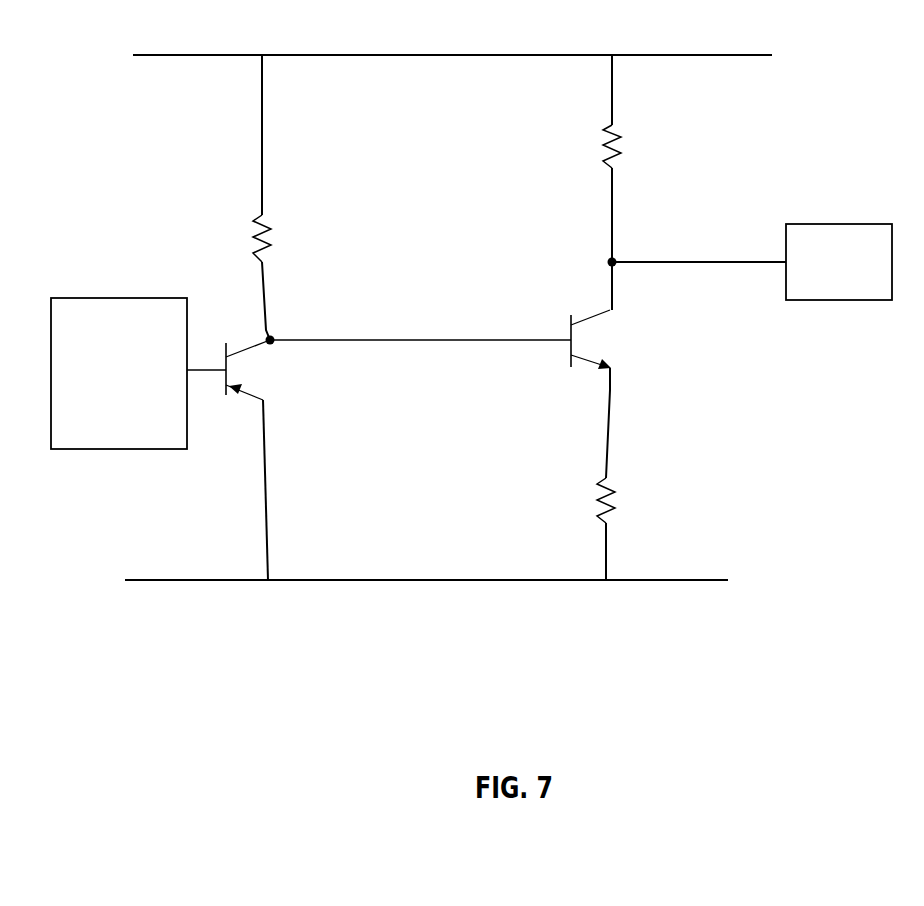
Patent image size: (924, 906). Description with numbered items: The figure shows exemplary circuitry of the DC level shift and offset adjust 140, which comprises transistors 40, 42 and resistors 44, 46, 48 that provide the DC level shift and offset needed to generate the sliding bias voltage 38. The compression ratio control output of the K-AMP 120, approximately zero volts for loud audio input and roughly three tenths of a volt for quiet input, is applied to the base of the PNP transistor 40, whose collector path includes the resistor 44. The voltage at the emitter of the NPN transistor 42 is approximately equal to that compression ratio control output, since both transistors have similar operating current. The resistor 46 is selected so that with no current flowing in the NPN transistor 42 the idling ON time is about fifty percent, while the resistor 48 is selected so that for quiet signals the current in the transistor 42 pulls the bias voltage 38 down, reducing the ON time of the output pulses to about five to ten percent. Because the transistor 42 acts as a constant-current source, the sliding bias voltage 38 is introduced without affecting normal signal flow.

The DC level shift and offset adjust 140 is at (212, 211).
The resistor 44 is at (286, 277).
The resistor 46 is at (633, 217).
The resistor 48 is at (625, 474).
The PNP transistor 40 is at (379, 458).
The NPN transistor 42 is at (616, 314).
The K-AMP 120 is at (119, 373).
The sliding bias voltage 38 is at (752, 262).